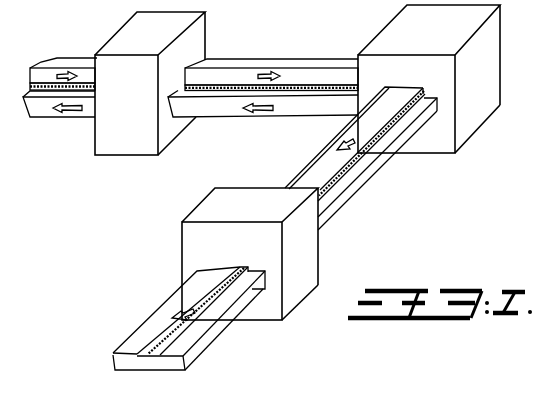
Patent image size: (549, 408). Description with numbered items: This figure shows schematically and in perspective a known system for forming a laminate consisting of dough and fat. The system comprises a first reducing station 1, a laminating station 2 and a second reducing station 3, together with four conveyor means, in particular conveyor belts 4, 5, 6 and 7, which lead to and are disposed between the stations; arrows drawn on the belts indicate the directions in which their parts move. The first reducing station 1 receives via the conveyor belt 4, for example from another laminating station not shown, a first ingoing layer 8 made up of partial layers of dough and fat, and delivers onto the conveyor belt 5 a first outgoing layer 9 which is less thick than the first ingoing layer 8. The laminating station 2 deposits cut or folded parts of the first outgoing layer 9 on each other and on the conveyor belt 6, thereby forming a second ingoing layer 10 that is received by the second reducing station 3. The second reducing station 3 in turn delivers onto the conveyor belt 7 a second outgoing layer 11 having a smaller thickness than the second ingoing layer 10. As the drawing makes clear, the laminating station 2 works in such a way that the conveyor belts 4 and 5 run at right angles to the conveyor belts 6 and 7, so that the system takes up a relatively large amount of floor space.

The first reducing station 1 is at (137, 40).
The laminating station 2 is at (422, 35).
The second reducing station 3 is at (313, 244).
The first conveyor belt 4 is at (47, 99).
The second conveyor belt 5 is at (295, 93).
The third conveyor belt 6 is at (372, 157).
The fourth conveyor belt 7 is at (190, 338).
The first ingoing layer 8 is at (43, 77).
The first outgoing layer 9 is at (215, 75).
The second ingoing layer 10 is at (305, 175).
The second outgoing layer 11 is at (200, 297).